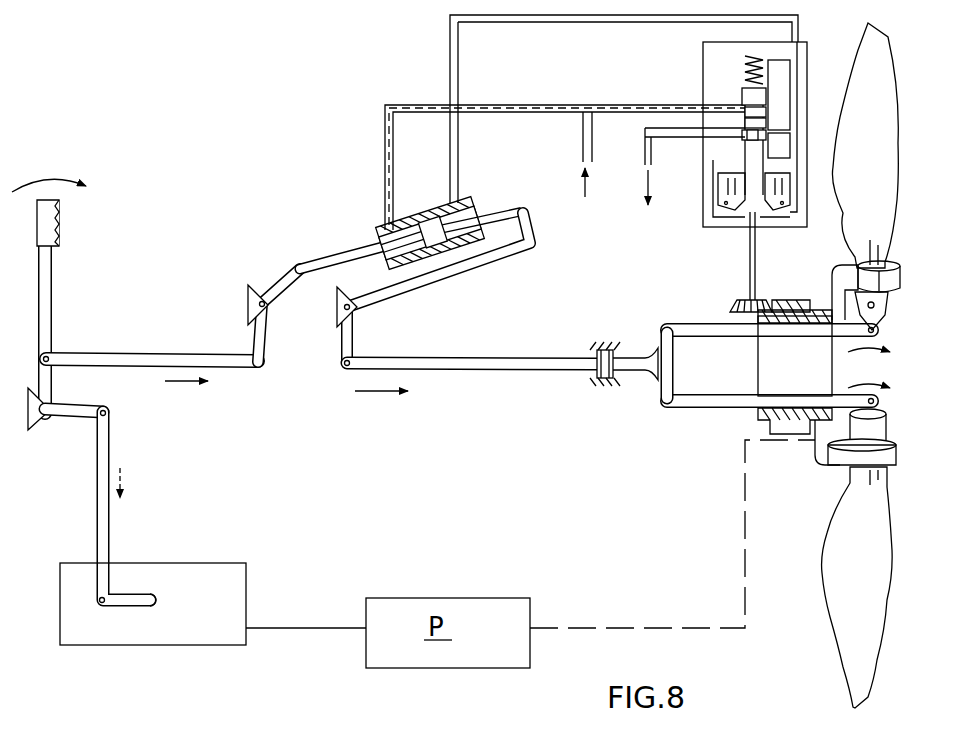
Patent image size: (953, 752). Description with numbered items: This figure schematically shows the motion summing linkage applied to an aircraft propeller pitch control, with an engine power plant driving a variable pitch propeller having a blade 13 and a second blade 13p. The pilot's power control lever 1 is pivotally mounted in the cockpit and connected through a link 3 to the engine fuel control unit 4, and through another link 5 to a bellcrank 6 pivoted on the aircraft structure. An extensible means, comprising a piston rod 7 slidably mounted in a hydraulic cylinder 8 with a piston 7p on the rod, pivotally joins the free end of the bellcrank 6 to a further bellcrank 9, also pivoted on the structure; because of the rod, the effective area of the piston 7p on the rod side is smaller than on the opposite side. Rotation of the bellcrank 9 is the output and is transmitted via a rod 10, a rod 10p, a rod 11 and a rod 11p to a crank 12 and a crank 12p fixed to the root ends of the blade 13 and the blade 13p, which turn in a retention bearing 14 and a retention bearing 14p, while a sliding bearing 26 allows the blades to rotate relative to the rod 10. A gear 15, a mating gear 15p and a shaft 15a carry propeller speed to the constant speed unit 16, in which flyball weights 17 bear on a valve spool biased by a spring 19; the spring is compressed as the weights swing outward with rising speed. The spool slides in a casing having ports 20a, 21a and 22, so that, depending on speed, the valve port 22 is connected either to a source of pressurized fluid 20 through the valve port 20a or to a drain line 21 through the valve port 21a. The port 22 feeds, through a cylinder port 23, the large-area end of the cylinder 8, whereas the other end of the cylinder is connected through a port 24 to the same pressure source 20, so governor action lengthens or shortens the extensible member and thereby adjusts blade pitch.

The power control lever 1 is at (46, 306).
The link 3 is at (99, 491).
The aircraft engine fuel control unit 4 is at (62, 602).
The link 5 is at (139, 356).
The bellcrank 6 is at (283, 290).
The piston rod 7 is at (350, 261).
The piston 7p is at (420, 222).
The hydraulic cylinder 8 is at (500, 218).
The bellcrank 9 is at (455, 273).
The rod 10 is at (528, 357).
The rod 10p is at (640, 345).
The rod 11 is at (704, 324).
The rod 11p is at (704, 408).
The crank 12 is at (878, 312).
The crank 12p is at (882, 417).
The propeller blade 13 is at (900, 212).
The propeller blade 13p is at (884, 548).
The retention bearing 14 is at (900, 272).
The retention bearing 14p is at (896, 458).
The gear 15 is at (780, 303).
The gear 15p is at (740, 299).
The shaft 15a is at (757, 256).
The constant speed unit 16 is at (700, 174).
The flyball weights 17 is at (724, 190).
The spring 19 is at (742, 72).
The source of pressurized fluid 20 is at (580, 158).
The valve port 20a is at (745, 103).
The drain line 21 is at (644, 160).
The valve port 21a is at (745, 138).
The valve port 22 is at (780, 127).
The cylinder port 23 is at (448, 214).
The port 24 is at (392, 228).
The sliding bearing 26 is at (606, 382).